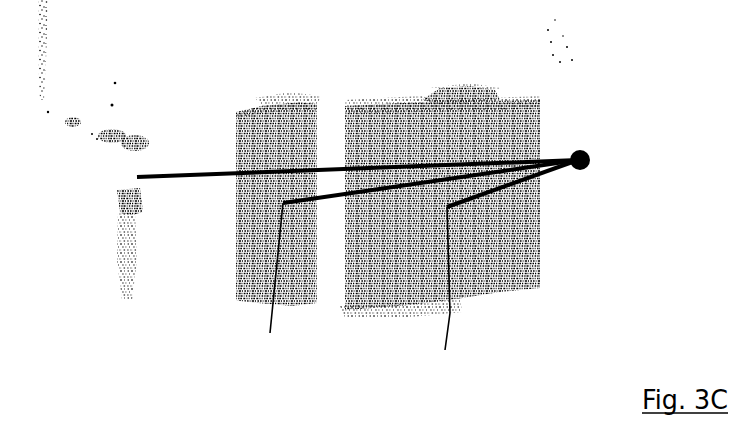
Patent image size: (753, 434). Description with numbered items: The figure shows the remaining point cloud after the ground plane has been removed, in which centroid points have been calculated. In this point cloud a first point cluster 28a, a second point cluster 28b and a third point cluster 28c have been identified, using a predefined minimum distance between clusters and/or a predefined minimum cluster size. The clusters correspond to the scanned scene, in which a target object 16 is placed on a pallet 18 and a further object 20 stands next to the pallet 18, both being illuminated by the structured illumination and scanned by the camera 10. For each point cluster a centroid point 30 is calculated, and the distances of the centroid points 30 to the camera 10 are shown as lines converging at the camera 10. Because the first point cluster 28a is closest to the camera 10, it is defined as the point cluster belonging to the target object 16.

The camera 10 is at (588, 167).
The target object 16 is at (470, 103).
The pallet 18 is at (538, 290).
The further object 20 is at (325, 100).
The first point cluster 28a is at (537, 123).
The second point cluster 28b is at (277, 133).
The third point cluster 28c is at (117, 198).
The centroid point 30 is at (137, 177).